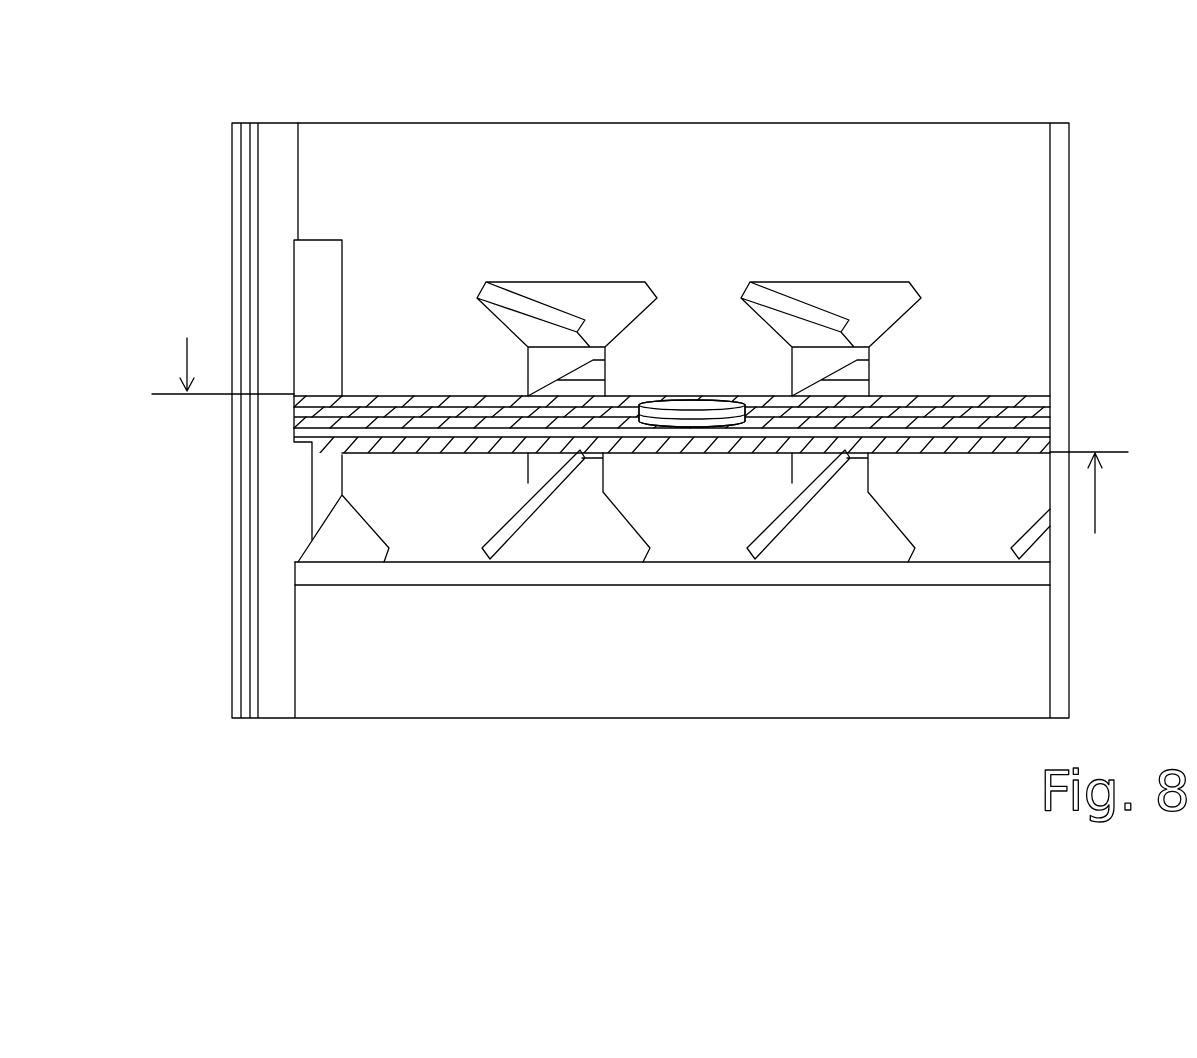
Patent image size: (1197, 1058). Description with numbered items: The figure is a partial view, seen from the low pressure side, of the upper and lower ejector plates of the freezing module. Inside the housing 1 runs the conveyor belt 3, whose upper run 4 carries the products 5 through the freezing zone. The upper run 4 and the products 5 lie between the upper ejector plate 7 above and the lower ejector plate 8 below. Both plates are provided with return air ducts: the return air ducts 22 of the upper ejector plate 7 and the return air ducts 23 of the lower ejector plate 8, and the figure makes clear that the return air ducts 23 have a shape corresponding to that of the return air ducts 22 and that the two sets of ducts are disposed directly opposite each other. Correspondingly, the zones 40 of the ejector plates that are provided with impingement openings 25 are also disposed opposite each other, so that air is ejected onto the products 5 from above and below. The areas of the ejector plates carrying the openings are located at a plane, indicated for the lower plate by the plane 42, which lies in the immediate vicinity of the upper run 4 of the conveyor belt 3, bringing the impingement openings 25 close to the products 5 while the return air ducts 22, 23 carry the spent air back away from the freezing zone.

The housing 1 is at (223, 364).
The conveyor belt 3 is at (327, 433).
The upper run 4 is at (1002, 393).
The products 5 is at (688, 400).
The upper ejector plate 7 is at (357, 305).
The lower ejector plate 8 is at (372, 507).
The return air ducts 22 is at (560, 282).
The return air ducts 23 is at (572, 535).
The impingement openings 25 is at (311, 507).
The zones provided with openings 40 is at (372, 398).
The plane 42 is at (1093, 492).